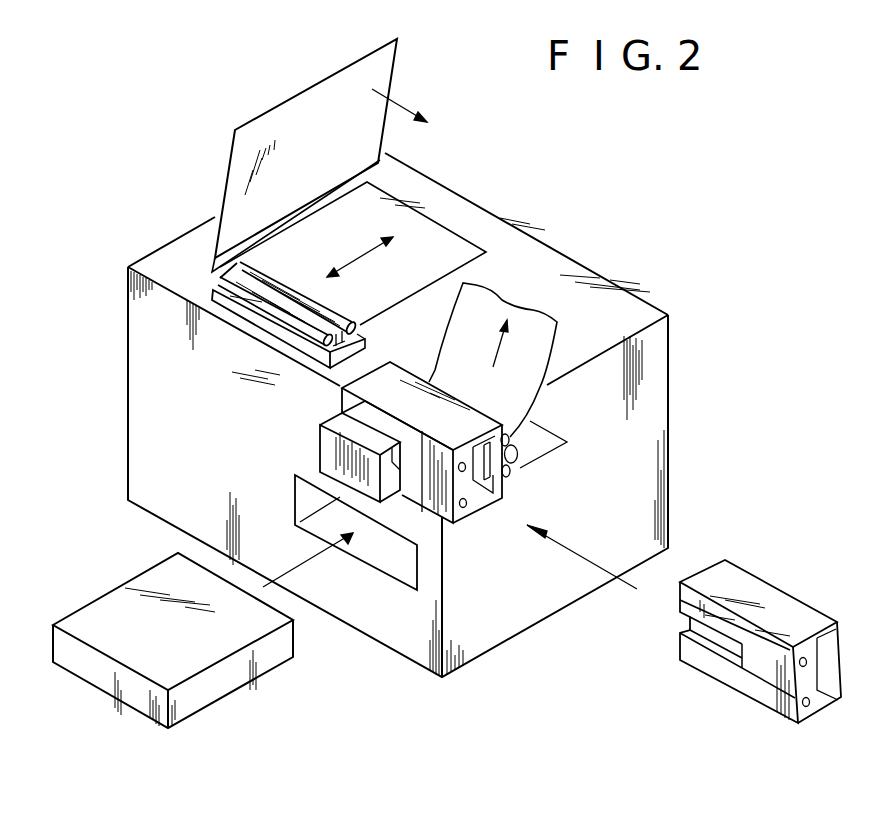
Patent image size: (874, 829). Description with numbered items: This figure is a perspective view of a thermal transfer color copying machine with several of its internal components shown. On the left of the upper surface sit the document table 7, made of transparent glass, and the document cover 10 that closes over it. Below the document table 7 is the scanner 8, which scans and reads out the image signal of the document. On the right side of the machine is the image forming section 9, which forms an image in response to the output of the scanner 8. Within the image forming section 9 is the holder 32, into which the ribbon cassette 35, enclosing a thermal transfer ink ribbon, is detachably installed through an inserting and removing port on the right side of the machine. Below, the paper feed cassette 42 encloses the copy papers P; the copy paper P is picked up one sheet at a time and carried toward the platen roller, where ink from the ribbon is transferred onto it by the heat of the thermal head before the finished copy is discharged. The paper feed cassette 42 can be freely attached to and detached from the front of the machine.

The document cover 10 is at (385, 77).
The document table 7 is at (427, 230).
The scanner 8 is at (350, 312).
The image forming section 9 is at (528, 472).
The copy paper P is at (538, 332).
The holder 32 is at (328, 444).
The paper feed cassette 42 is at (230, 683).
The ribbon cassette 35 is at (785, 605).